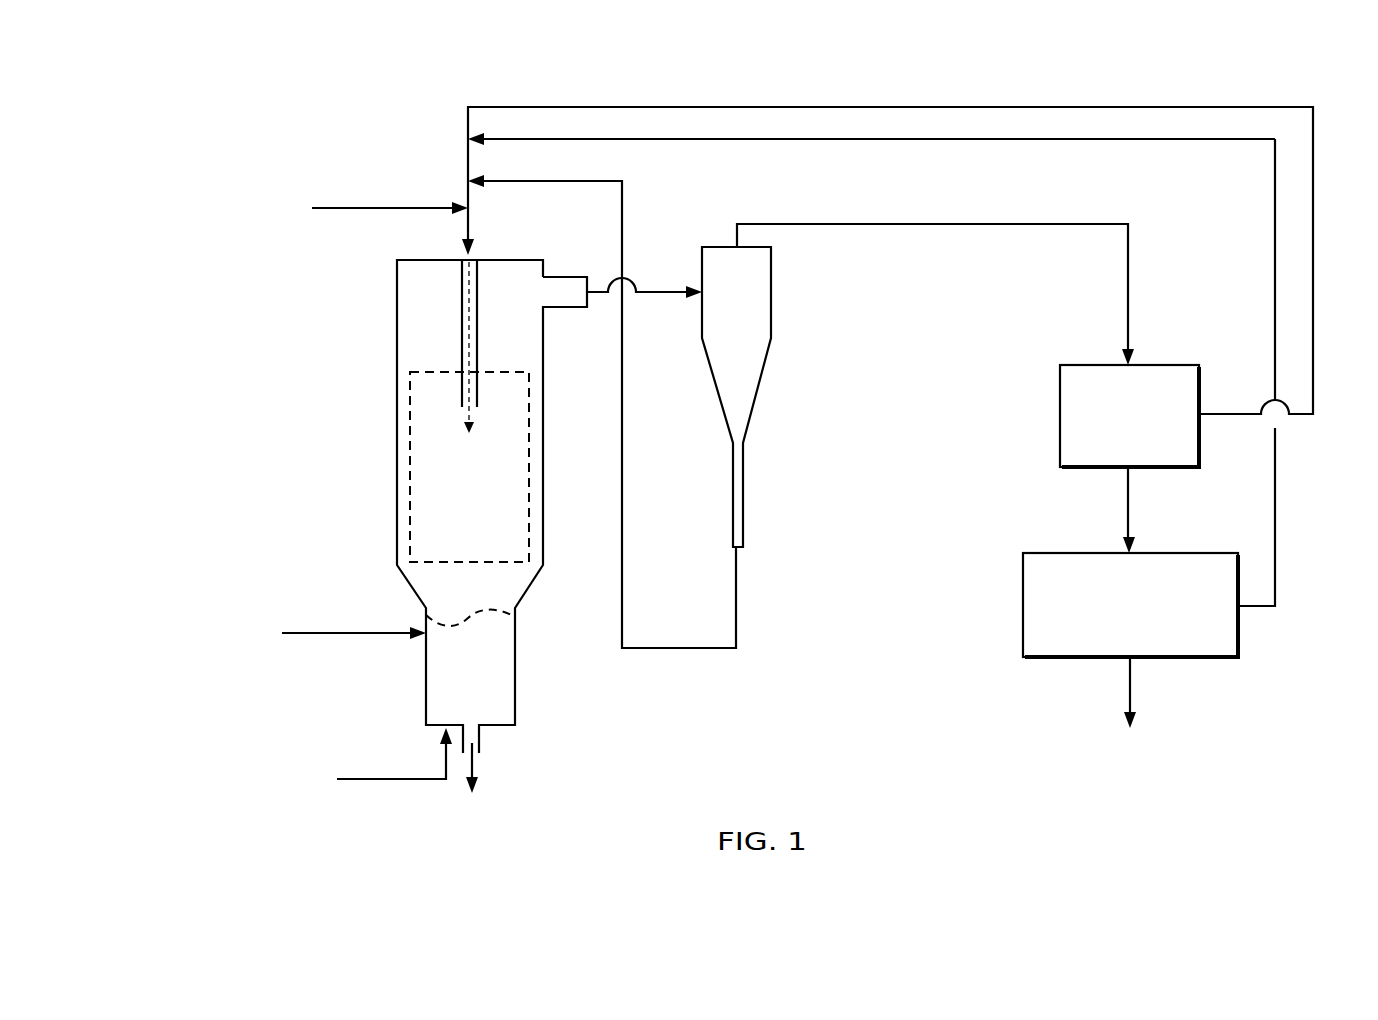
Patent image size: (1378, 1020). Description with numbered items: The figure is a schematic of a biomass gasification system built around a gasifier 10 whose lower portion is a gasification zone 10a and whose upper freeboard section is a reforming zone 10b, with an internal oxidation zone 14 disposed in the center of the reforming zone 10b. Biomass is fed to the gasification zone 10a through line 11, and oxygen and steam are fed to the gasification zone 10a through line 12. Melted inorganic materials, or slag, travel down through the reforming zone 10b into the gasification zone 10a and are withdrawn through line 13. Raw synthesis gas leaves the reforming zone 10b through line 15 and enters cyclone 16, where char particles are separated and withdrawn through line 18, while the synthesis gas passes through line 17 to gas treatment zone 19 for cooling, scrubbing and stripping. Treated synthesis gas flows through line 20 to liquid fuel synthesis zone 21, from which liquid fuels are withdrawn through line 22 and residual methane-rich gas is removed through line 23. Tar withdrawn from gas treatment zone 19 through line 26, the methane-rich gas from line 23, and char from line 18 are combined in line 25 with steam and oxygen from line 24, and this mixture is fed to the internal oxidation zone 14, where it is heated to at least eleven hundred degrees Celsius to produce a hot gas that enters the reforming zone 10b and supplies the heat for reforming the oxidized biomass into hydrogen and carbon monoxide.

The gasifier 10 is at (397, 432).
The gasification zone 10a is at (355, 697).
The reforming zone 10b is at (444, 348).
The line 11 is at (374, 633).
The line 12 is at (380, 780).
The line 13 is at (475, 768).
The internal oxidation zone 14 is at (480, 554).
The line 15 is at (661, 291).
The cyclone 16 is at (712, 395).
The line 17 is at (1058, 223).
The line 18 is at (737, 627).
The gas treatment zone 19 is at (1140, 454).
The line 20 is at (1127, 500).
The liquid fuel synthesis zone 21 is at (1141, 643).
The line 22 is at (1129, 692).
The line 23 is at (1276, 565).
The line 24 is at (387, 208).
The line 25 is at (466, 148).
The line 26 is at (1267, 107).